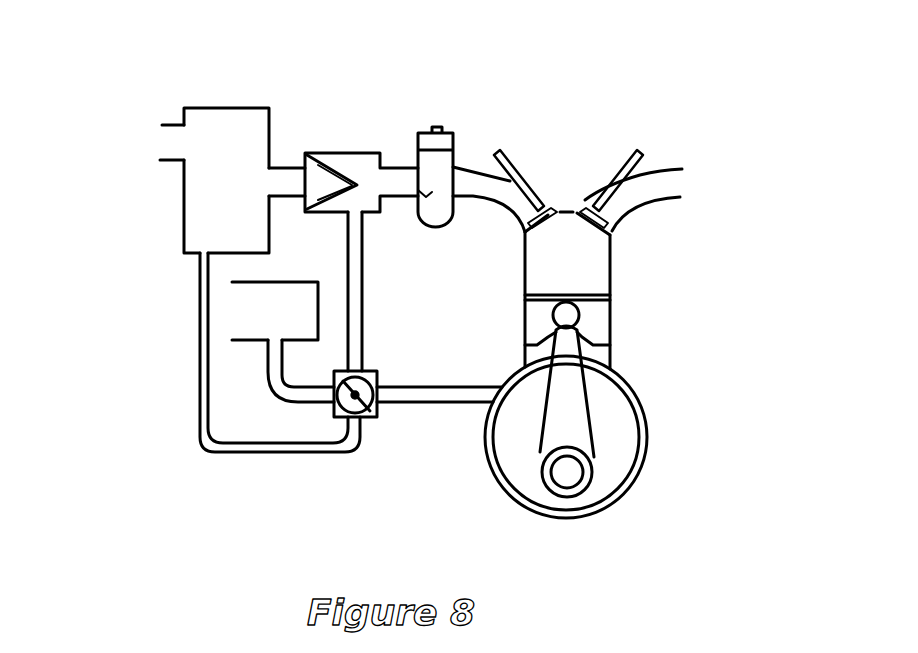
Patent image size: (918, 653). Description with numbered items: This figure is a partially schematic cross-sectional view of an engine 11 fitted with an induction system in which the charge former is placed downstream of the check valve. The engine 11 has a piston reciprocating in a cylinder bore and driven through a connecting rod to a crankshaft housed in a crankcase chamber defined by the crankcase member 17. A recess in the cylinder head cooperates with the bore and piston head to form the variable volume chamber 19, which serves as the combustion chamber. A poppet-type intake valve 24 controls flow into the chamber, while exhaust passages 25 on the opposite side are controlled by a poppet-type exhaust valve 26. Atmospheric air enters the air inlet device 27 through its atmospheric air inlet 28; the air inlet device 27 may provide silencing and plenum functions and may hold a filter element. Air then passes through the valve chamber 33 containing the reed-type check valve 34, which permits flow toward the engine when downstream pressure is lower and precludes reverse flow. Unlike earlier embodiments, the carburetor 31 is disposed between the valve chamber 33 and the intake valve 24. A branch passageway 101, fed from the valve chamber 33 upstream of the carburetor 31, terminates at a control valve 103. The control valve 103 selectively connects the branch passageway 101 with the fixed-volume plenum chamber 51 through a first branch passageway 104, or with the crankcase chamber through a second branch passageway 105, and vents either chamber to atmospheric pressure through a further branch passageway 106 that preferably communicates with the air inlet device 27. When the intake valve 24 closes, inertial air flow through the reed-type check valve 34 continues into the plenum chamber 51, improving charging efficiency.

The engine 11 is at (621, 301).
The crankcase member 17 is at (647, 432).
The variable volume chamber 19 is at (565, 225).
The intake valve 24 is at (543, 197).
The exhaust passage 25 is at (658, 183).
The exhaust valve 26 is at (588, 200).
The air inlet device 27 is at (220, 108).
The atmospheric air inlet 28 is at (173, 145).
The carburetor 31 is at (417, 153).
The valve chamber 33 is at (355, 155).
The reed-type check valve 34 is at (334, 157).
The plenum chamber 51 is at (263, 313).
The branch passageway 101 is at (355, 278).
The control valve 103 is at (373, 417).
The first branch passageway 104 is at (323, 405).
The second branch passageway 105 is at (435, 395).
The further branch passageway 106 is at (252, 453).